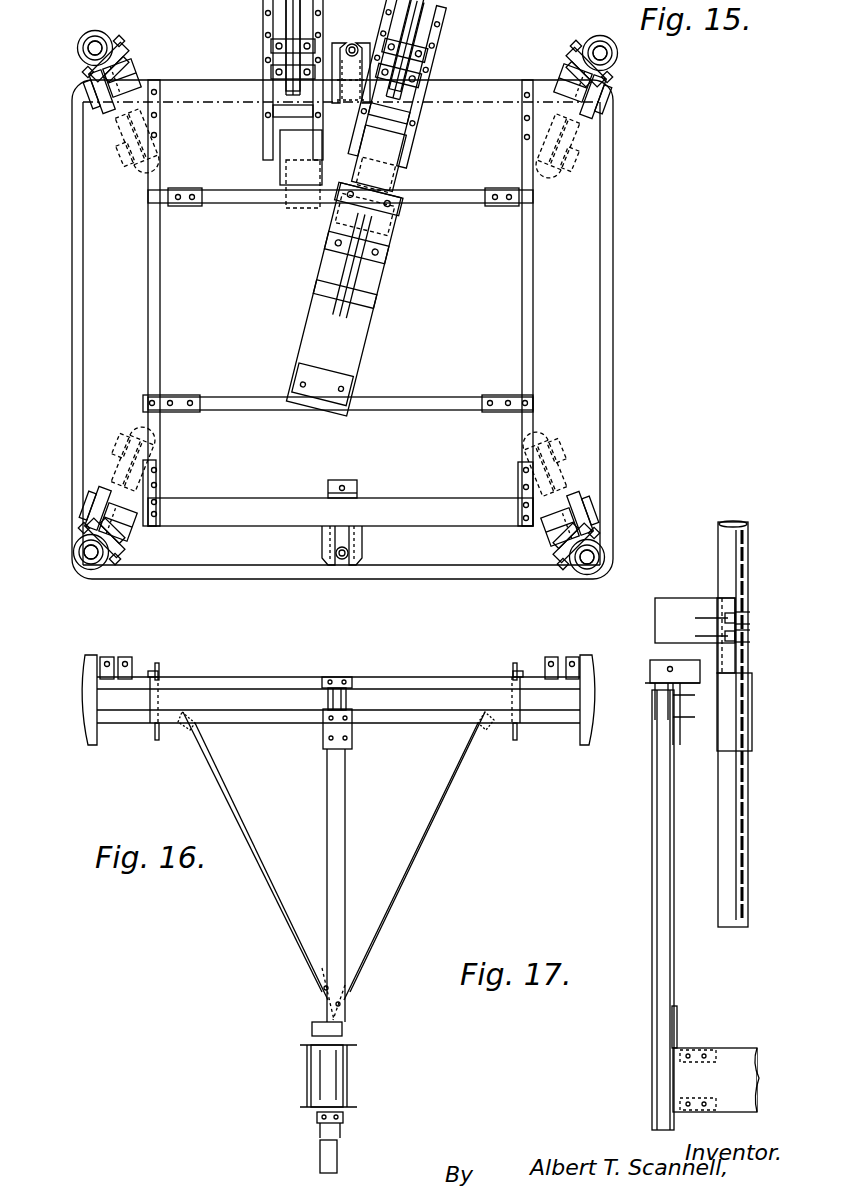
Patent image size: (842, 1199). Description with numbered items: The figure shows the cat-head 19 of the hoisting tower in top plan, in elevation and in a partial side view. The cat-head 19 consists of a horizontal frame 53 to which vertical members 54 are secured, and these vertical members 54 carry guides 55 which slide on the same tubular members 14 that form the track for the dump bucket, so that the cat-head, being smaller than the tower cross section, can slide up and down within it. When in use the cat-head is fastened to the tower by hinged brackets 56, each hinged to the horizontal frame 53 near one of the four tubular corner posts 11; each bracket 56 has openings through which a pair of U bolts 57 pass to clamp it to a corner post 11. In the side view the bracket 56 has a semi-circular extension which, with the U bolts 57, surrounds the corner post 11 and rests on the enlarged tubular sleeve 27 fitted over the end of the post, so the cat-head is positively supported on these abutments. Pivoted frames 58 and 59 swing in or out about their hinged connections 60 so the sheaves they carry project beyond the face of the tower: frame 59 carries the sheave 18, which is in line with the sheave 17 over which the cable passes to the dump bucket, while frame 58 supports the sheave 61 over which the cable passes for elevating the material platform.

In FIG. 15, the tubular corner post 11 is at (90, 34).
In FIG. 17, the tubular corner post 11 is at (745, 538).
In FIG. 15, the tubular member 14 is at (341, 562).
In FIG. 15, the sheave 17 is at (382, 255).
In FIG. 15, the sheave 18 is at (430, 36).
In FIG. 15, the cat-head 19 is at (146, 283).
In FIG. 17, the tubular sleeve 27 is at (735, 742).
In FIG. 15, the horizontal frame 53 is at (222, 498).
In FIG. 16, the horizontal frame 53 is at (235, 682).
In FIG. 17, the horizontal frame 53 is at (668, 683).
In FIG. 16, the vertical member 54 is at (345, 810).
In FIG. 17, the vertical member 54 is at (655, 888).
In FIG. 15, the guide 55 is at (364, 540).
In FIG. 16, the guide 55 is at (352, 678).
In FIG. 15, the hinged bracket 56 is at (100, 78).
In FIG. 17, the hinged bracket 56 is at (725, 600).
In FIG. 15, the U bolt 57 is at (110, 42).
In FIG. 17, the U bolt 57 is at (740, 634).
In FIG. 15, the pivoted frame 58 is at (265, 68).
In FIG. 15, the pivoted frame 59 is at (435, 42).
In FIG. 15, the hinged connection 60 is at (278, 120).
In FIG. 15, the sheave 61 is at (268, 24).